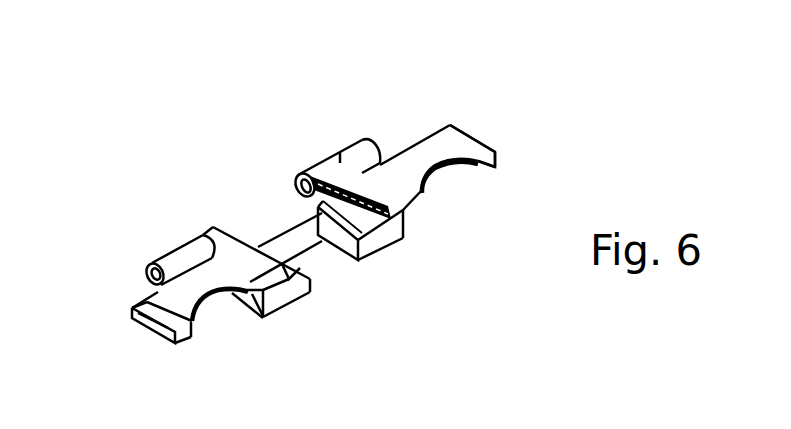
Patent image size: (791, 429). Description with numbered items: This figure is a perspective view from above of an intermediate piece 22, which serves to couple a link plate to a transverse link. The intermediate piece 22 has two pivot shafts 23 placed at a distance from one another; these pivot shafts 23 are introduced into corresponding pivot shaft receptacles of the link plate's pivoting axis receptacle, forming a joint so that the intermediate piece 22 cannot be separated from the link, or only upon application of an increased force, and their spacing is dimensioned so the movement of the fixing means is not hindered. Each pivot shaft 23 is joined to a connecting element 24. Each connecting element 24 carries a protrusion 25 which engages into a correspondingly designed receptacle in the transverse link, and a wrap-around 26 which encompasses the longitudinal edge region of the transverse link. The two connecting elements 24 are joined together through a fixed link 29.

The intermediate piece 22 is at (306, 88).
The pivot shaft 23 is at (170, 258).
The connecting element 24 is at (131, 320).
The protrusion 25 is at (373, 247).
The wrap-around 26 is at (195, 348).
The fixed link 29 is at (292, 235).